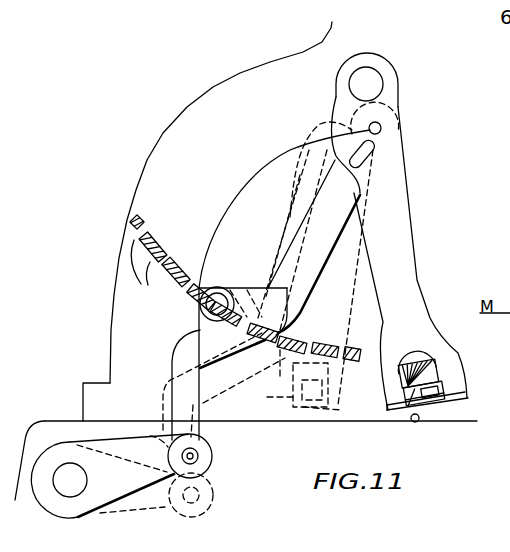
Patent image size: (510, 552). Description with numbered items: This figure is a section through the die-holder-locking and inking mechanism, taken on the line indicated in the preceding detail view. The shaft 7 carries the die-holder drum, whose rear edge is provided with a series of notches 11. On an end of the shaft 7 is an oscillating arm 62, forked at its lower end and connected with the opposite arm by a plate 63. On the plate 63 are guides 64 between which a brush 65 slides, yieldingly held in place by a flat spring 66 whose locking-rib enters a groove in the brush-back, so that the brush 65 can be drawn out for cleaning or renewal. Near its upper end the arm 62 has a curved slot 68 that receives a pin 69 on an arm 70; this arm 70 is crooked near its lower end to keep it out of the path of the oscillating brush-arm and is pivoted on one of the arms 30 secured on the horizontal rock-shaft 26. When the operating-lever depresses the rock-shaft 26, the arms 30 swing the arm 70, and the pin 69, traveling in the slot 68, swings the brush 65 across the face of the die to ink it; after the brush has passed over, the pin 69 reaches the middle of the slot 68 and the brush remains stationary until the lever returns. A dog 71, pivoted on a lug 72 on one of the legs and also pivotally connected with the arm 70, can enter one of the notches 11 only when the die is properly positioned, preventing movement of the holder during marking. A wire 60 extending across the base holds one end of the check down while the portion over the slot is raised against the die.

The shaft 7 is at (373, 78).
The notches 11 is at (183, 292).
The rock-shaft 26 is at (109, 476).
The arms 30 is at (142, 477).
The wire 60 is at (418, 422).
The oscillating arm 62 is at (402, 251).
The plate 63 is at (432, 402).
The guides 64 is at (405, 388).
The brush 65 is at (439, 367).
The flat spring 66 is at (418, 398).
The curved slot 68 is at (360, 160).
The pin 69 is at (381, 126).
The arm 70 is at (309, 256).
The dog 71 is at (252, 296).
The lug 72 is at (210, 287).